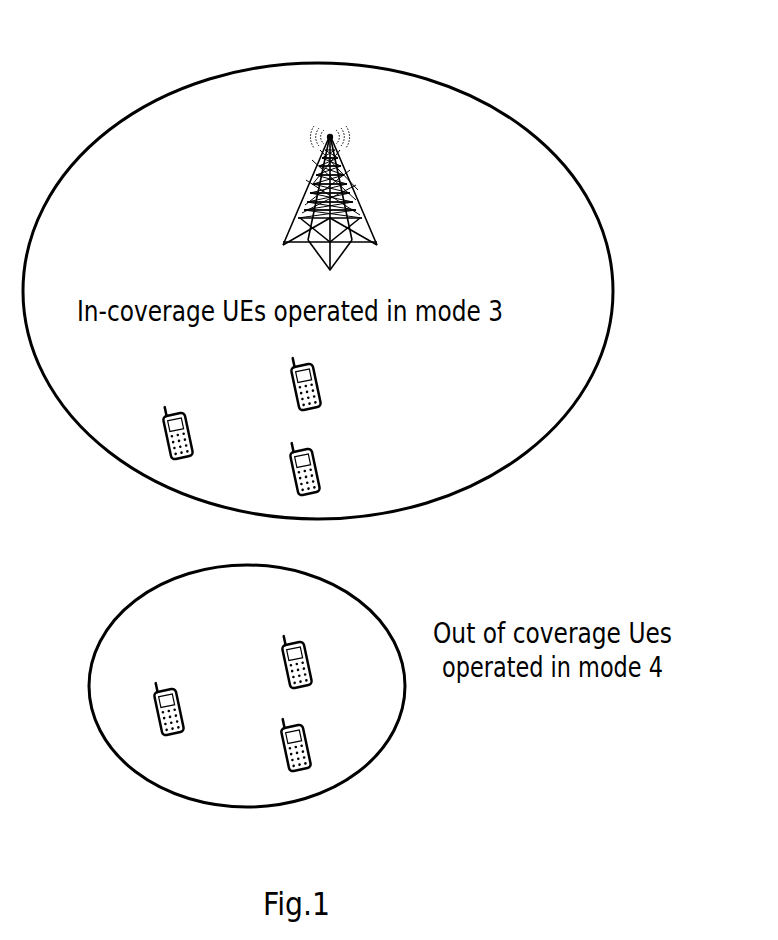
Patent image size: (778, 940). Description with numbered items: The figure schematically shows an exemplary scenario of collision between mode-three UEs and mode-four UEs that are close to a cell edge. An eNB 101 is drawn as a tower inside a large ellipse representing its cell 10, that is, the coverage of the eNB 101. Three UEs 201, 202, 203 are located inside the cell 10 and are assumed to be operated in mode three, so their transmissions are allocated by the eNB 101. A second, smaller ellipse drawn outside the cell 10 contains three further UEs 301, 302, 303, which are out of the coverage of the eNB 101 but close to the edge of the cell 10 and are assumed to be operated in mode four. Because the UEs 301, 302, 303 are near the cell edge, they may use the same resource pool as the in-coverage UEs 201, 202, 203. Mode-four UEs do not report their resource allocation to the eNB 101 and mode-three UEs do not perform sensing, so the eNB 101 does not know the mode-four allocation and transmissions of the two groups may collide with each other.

The cell 10 is at (265, 65).
The eNB 101 is at (345, 176).
The UE 201 is at (165, 412).
The UE 202 is at (322, 380).
The UE 203 is at (320, 468).
The UE 301 is at (156, 689).
The UE 302 is at (312, 660).
The UE 303 is at (310, 743).